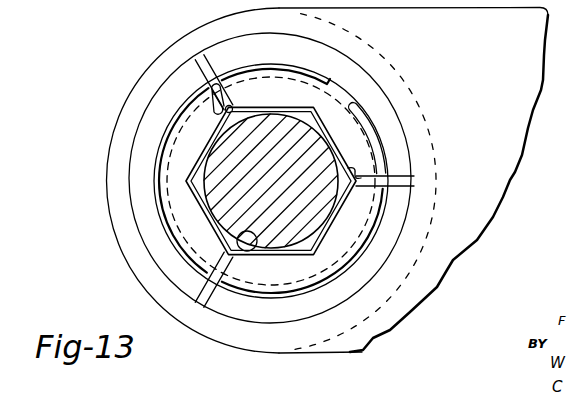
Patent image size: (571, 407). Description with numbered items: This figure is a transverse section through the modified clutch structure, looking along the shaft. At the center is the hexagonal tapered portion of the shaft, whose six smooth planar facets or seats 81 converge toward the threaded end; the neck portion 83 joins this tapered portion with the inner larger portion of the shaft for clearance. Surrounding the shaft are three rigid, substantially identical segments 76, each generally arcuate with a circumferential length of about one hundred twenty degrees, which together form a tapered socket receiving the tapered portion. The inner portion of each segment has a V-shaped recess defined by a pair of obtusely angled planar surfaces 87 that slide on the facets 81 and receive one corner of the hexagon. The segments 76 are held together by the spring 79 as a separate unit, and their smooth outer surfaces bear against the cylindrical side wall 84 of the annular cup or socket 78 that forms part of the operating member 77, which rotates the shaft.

The segments 76 is at (275, 82).
The operating member 77 is at (520, 95).
The annular cup or socket 78 is at (107, 217).
The spring 79 is at (375, 137).
The planar facets or seats 81 is at (236, 93).
The neck portion 83 is at (313, 168).
The cylindrical side wall 84 is at (138, 121).
The obtusely angled planar surfaces 87 is at (190, 189).